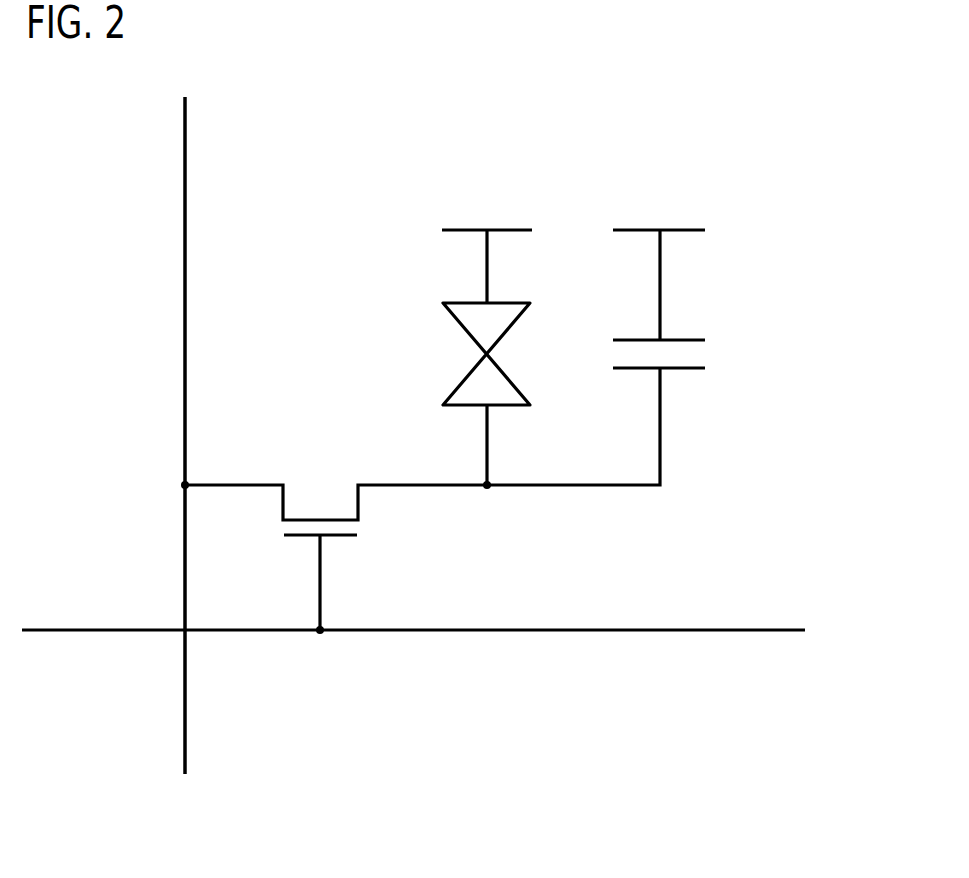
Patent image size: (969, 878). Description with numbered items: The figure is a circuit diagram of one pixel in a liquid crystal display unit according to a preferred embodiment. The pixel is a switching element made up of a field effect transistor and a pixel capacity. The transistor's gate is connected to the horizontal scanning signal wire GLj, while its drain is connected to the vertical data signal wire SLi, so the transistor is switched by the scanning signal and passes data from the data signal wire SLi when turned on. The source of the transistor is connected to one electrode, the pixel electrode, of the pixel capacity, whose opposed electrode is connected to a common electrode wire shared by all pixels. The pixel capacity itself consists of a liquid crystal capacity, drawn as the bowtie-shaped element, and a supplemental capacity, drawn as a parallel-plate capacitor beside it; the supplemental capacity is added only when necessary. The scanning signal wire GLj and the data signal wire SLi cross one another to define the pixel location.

The data signal wire SLi is at (185, 152).
The scanning signal wire GLj is at (91, 630).